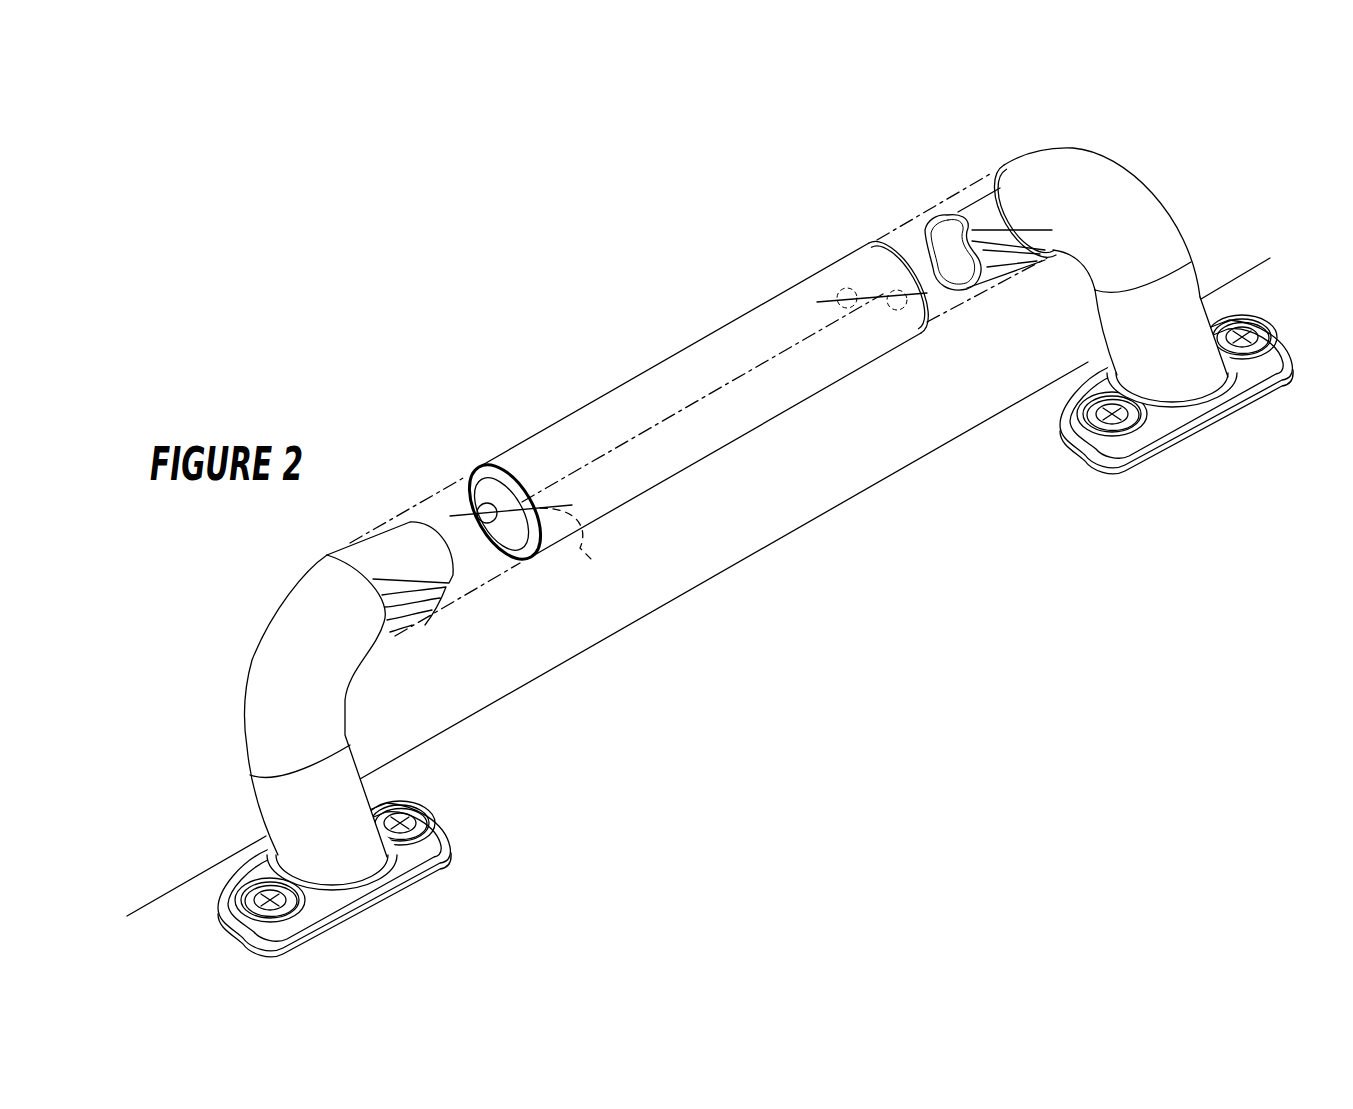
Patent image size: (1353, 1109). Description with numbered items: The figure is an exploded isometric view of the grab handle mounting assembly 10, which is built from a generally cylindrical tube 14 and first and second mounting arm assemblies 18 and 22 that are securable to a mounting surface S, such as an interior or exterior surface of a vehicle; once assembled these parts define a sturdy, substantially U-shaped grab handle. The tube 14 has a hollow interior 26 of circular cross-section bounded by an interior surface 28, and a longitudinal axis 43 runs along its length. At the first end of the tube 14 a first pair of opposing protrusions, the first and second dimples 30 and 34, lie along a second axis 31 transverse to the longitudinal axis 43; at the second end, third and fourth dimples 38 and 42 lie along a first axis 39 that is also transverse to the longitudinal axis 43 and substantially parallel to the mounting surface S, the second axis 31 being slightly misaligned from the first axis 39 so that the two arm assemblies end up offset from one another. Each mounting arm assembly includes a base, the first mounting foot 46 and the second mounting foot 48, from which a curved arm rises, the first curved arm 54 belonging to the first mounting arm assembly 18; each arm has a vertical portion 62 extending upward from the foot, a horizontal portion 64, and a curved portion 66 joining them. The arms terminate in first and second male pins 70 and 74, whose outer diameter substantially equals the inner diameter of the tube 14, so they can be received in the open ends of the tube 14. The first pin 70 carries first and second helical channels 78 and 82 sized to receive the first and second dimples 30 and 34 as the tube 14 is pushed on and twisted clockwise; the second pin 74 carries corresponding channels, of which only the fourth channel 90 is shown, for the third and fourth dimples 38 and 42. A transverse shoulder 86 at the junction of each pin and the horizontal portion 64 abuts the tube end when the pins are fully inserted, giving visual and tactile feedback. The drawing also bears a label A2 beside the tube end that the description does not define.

The grab handle mounting assembly 10 is at (561, 294).
The tube 14 is at (700, 350).
The first mounting arm assembly 18 is at (1196, 158).
The second mounting arm assembly 22 is at (216, 656).
The hollow interior 26 is at (490, 483).
The interior surface 28 is at (503, 542).
The first dimple 30 is at (838, 290).
The second axis 31 is at (826, 298).
The second dimple 34 is at (903, 312).
The third dimple 38 is at (482, 508).
The first axis 39 is at (567, 497).
The fourth dimple 42 is at (580, 541).
The longitudinal axis 43 is at (630, 440).
The transverse axis A2 is at (512, 548).
The first mounting foot 46 is at (1246, 373).
The second mounting foot 48 is at (399, 864).
The first curved arm 54 is at (1196, 240).
The vertical portion 62 is at (1213, 306).
The horizontal portion 64 is at (1040, 165).
The curved portion 66 is at (1120, 181).
The first male pin 70 is at (975, 200).
The second male pin 74 is at (393, 546).
The first helical channel 78 is at (936, 252).
The second helical channel 82 is at (1011, 260).
The transverse shoulder 86 is at (1046, 256).
The fourth channel 90 is at (418, 600).
The mounting surface S is at (793, 546).